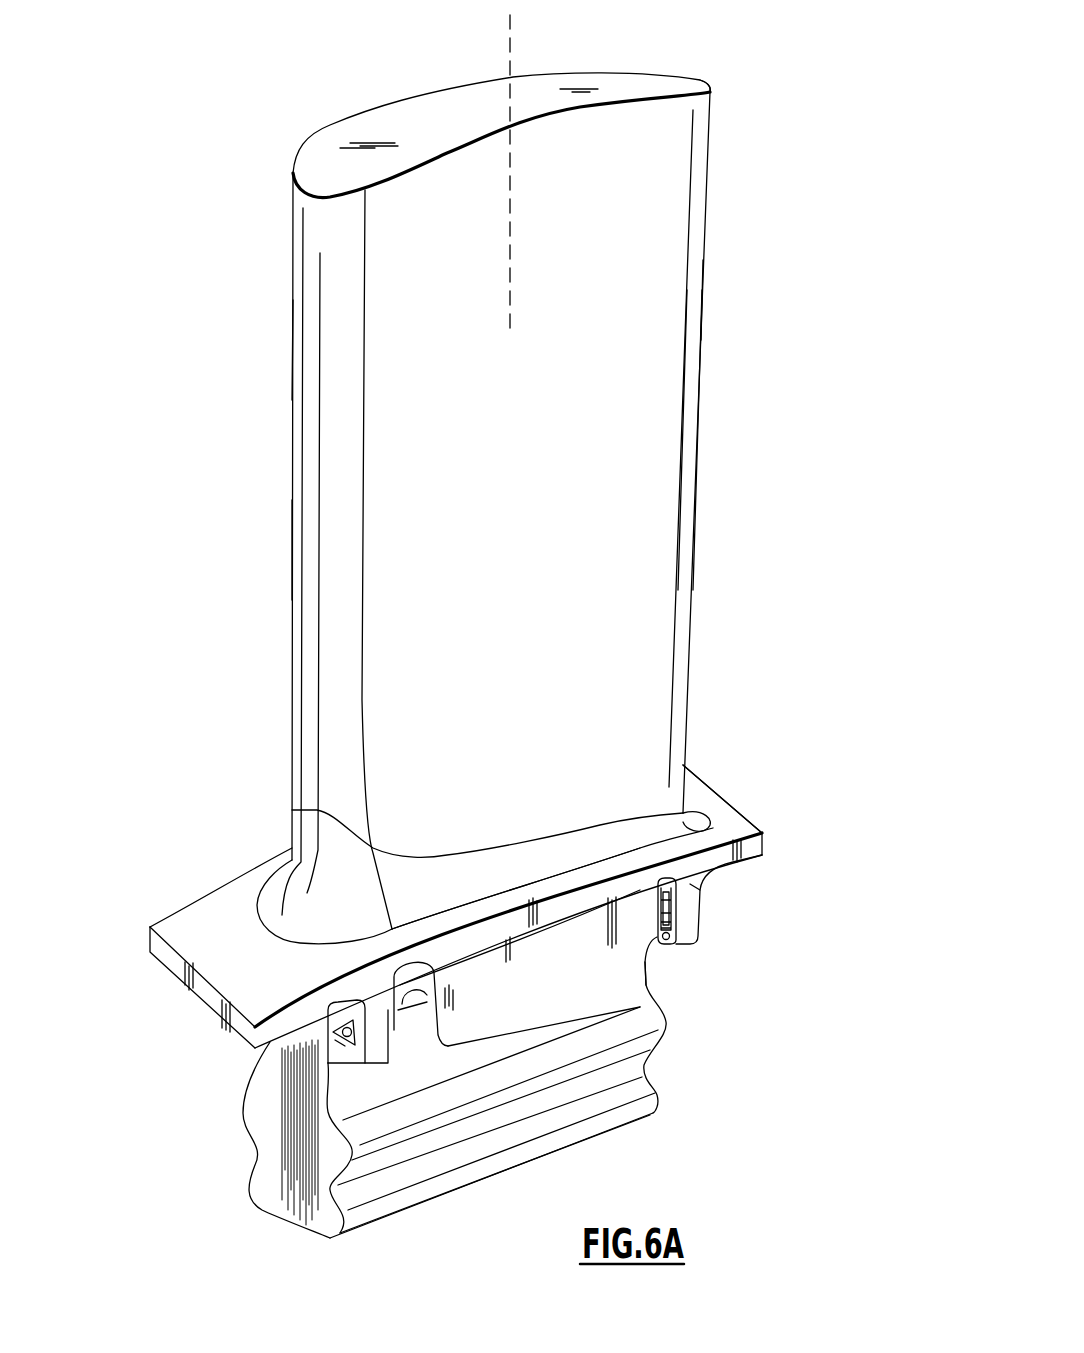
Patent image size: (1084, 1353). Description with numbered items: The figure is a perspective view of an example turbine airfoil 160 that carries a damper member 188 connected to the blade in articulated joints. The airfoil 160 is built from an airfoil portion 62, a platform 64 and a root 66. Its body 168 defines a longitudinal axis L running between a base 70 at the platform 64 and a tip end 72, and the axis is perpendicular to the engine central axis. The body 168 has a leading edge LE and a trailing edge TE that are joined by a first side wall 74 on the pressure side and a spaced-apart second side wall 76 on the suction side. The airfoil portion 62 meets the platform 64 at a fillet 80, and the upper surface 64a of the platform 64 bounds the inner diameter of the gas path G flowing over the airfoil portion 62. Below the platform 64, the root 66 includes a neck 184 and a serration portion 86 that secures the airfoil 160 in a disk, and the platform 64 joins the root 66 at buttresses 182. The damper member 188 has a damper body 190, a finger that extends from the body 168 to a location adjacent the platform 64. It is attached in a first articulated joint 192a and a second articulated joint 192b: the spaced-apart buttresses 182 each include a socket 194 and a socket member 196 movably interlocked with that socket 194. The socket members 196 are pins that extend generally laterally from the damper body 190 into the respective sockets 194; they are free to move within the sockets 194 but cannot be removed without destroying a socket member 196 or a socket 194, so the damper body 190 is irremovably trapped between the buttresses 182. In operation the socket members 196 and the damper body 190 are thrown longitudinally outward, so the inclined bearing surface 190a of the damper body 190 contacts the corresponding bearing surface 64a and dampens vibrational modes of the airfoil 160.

The airfoil portion 62 is at (665, 452).
The platform 64 is at (720, 800).
The upper surface 64a is at (527, 933).
The root 66 is at (668, 1056).
The base 70 is at (263, 918).
The tip end 72 is at (322, 162).
The first side wall 74 is at (679, 187).
The second side wall 76 is at (677, 73).
The fillet 80 is at (303, 873).
The serration portion 86 is at (358, 1175).
The airfoil 160 is at (192, 726).
The body 168 is at (665, 563).
The buttresses 182 is at (382, 1047).
The neck 184 is at (620, 985).
The damper member 188 is at (496, 1004).
The damper body 190 is at (758, 848).
The inclined bearing surface 190a is at (438, 1032).
The first articulated joint 192a is at (336, 1035).
The second articulated joint 192b is at (680, 902).
The socket 194 is at (332, 1046).
The socket member 196 is at (343, 1031).
The leading edge LE is at (290, 349).
The trailing edge TE is at (708, 311).
The longitudinal axis L is at (513, 241).
The gas path G is at (264, 660).